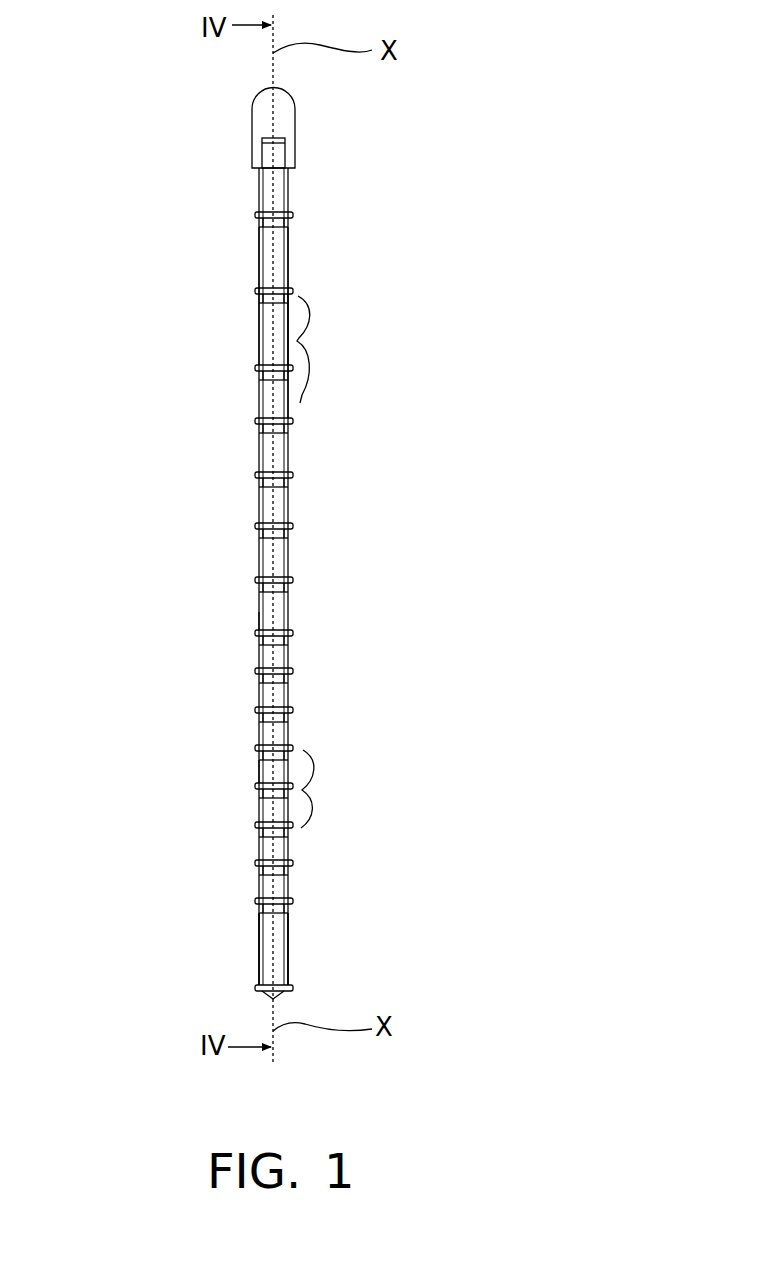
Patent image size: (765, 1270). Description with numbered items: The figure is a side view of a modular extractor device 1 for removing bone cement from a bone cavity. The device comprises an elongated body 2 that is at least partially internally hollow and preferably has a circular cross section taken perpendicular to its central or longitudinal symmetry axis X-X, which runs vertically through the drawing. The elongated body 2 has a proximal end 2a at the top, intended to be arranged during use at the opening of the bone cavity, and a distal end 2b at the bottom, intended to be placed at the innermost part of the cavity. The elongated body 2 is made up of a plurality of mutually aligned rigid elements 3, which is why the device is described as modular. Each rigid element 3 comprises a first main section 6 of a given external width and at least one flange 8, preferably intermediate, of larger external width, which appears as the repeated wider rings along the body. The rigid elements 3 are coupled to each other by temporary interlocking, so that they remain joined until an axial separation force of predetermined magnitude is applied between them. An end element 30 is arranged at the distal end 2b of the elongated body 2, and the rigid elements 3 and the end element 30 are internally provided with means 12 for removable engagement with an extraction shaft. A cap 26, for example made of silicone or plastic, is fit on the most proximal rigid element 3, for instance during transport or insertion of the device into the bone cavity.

The modular extractor device 1 is at (309, 550).
The elongated body 2 is at (309, 550).
The proximal end 2a is at (268, 143).
The distal end 2b is at (194, 926).
The rigid element 3 is at (316, 340).
The first main section 6 is at (259, 258).
The flange 8 is at (293, 421).
The means for removable engagement 12 is at (302, 244).
The cap 26 is at (296, 131).
The end element 30 is at (234, 968).